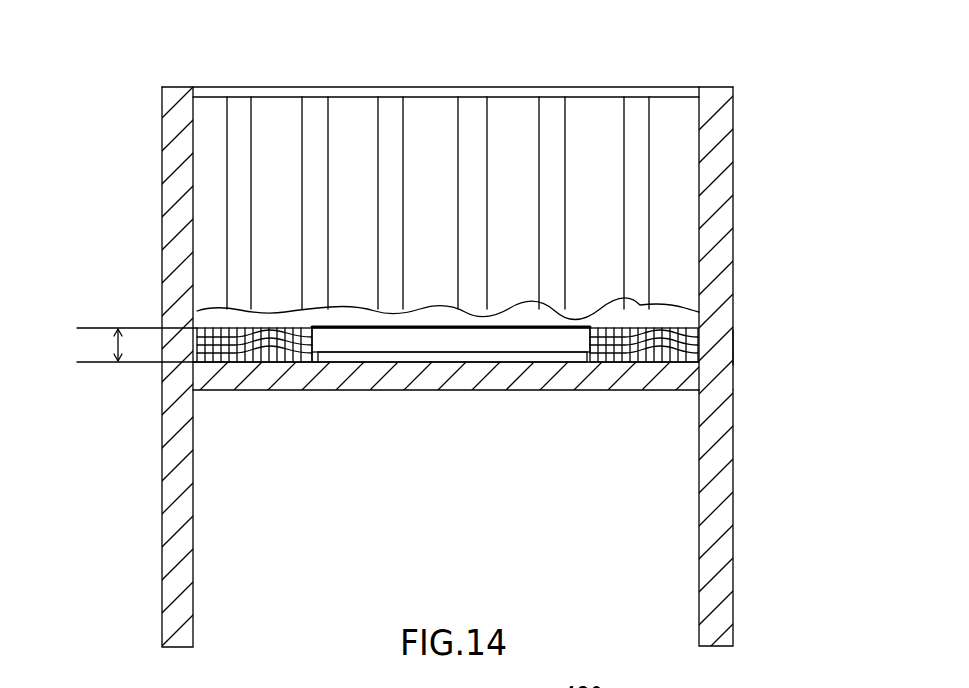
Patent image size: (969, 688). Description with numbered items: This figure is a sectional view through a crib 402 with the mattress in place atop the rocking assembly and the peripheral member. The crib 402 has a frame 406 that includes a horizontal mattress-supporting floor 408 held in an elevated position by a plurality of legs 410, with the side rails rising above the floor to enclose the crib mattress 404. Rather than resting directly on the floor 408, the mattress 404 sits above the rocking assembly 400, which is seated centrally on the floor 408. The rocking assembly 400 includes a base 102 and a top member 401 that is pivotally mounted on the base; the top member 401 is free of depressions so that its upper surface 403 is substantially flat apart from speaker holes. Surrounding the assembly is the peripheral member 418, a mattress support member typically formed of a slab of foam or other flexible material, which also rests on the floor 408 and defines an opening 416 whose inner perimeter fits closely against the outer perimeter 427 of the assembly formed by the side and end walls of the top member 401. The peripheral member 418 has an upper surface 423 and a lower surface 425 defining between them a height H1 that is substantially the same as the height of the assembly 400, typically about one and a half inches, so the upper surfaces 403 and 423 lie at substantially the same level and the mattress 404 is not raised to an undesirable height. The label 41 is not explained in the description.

The heat sink fins 41 is at (515, 85).
The crib 402 is at (737, 190).
The legs 410 is at (740, 500).
The frame 406 is at (750, 347).
The crib mattress 404 is at (204, 305).
The peripheral member 418 is at (257, 374).
The upper surface 423 is at (270, 327).
The lower surface 425 is at (272, 363).
The outer perimeter 427 is at (605, 327).
The upper surface 403 is at (497, 326).
The top member 401 is at (500, 342).
The base 102 is at (553, 360).
The opening 416 is at (320, 360).
The rocking assembly 400 is at (443, 366).
The mattress-supporting floor 408 is at (632, 392).
The height H1 is at (128, 345).